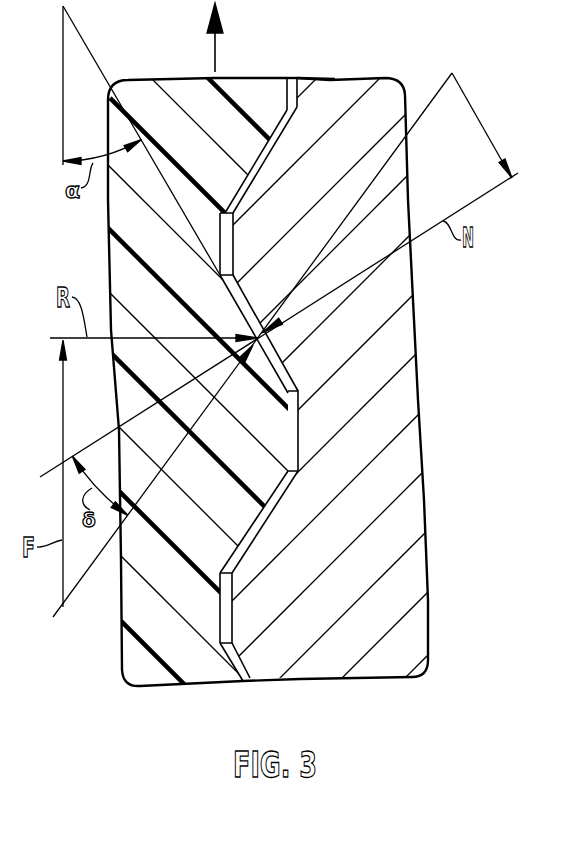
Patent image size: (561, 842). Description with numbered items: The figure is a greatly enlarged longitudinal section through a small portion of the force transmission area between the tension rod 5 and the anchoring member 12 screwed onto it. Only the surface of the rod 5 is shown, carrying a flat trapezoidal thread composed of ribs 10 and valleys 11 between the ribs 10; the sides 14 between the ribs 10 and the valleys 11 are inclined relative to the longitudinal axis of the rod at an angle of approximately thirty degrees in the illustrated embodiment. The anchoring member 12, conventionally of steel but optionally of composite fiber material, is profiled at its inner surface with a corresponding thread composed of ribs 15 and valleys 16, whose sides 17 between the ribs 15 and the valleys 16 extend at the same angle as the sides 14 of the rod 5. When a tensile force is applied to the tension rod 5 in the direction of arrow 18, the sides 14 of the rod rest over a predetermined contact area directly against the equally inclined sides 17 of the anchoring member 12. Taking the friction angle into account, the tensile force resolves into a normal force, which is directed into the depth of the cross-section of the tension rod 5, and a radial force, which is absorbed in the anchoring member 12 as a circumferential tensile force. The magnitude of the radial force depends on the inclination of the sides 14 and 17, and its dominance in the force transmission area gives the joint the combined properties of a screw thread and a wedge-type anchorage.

The tension rod 5 is at (105, 660).
The ribs 10 is at (286, 92).
The valleys 11 is at (220, 245).
The anchoring member 12 is at (431, 372).
The sides 14 is at (253, 160).
The ribs 15 is at (233, 247).
The valleys 16 is at (300, 88).
The sides 17 is at (268, 158).
The arrow 18 is at (213, 52).